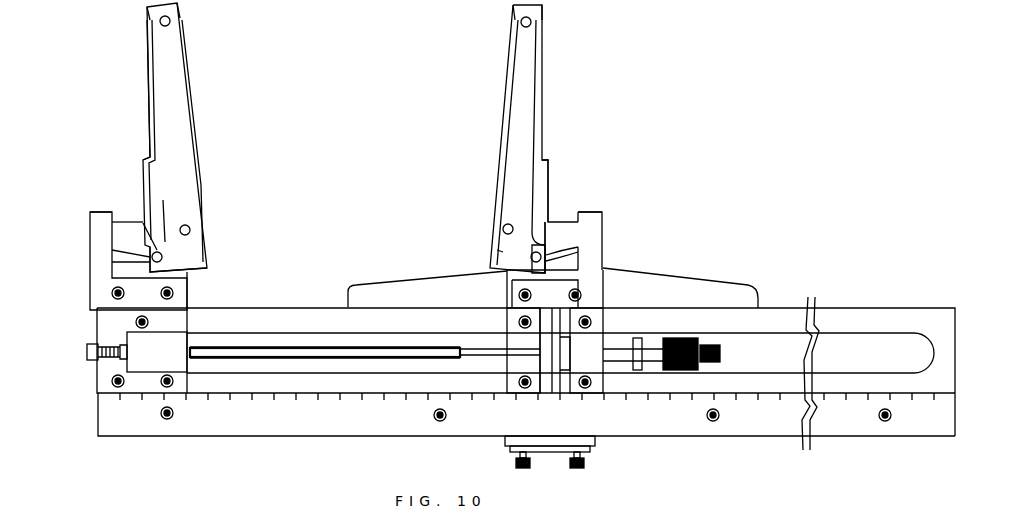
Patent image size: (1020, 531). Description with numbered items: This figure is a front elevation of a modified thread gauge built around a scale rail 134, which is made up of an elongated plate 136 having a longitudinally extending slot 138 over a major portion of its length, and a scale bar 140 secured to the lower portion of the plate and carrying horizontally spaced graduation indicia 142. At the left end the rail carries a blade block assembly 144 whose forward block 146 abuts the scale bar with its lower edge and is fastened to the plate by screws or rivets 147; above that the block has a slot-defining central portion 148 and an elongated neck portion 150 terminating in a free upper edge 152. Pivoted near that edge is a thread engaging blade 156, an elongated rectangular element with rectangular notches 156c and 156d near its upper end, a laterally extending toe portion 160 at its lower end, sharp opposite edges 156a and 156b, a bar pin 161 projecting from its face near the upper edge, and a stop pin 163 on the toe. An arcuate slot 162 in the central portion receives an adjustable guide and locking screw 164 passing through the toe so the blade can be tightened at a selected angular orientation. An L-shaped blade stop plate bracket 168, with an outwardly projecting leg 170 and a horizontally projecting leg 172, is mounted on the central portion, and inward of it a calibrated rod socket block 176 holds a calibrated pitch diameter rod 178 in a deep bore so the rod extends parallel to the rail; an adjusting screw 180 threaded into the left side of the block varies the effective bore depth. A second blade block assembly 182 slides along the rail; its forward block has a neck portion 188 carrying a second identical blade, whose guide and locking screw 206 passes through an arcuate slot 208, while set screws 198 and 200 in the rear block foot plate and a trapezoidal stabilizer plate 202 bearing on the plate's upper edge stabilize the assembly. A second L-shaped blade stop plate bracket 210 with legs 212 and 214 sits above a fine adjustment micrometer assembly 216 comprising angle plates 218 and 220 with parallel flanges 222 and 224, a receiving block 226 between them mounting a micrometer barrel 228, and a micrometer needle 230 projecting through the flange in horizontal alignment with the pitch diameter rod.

The scale rail 134 is at (873, 306).
The elongated plate 136 is at (835, 317).
The elongated slot 138 is at (223, 338).
The scale bar 140 is at (220, 420).
The graduation indicia 142 is at (277, 398).
The blade block assembly 144 is at (93, 376).
The forward block 146 is at (105, 320).
The screws or rivets 147 is at (125, 388).
The slot-defining central portion 148 is at (120, 228).
The elongated neck portion 150 is at (150, 145).
The free upper edge 152 is at (850, 530).
The thread engaging blade 156 is at (182, 141).
The sharp edge 156a is at (190, 68).
The sharp edge 156b is at (150, 51).
The rectangular notch 156c is at (148, 14).
The rectangular notch 156d is at (180, 13).
The toe portion 160 is at (163, 255).
The bar pin 161 is at (168, 26).
The arcuate slot 162 is at (178, 266).
The stop pin 163 is at (190, 229).
The adjustable guide and locking screw 164 is at (143, 218).
The L-shaped blade stop plate bracket 168 is at (88, 243).
The outwardly projecting leg 170 is at (93, 212).
The horizontally projecting leg 172 is at (155, 302).
The calibrated rod socket block 176 is at (167, 359).
The calibrated pitch diameter rod 178 is at (255, 352).
The adjusting screw 180 is at (90, 350).
The second blade block assembly 182 is at (640, 266).
The neck portion 188 is at (543, 138).
The set screw 198 is at (585, 465).
The set screw 200 is at (516, 465).
The stabilizer plate 202 is at (415, 304).
The guide and locking screw 206 is at (540, 253).
The arcuate slot 208 is at (578, 250).
The L-shaped blade stop plate bracket 210 is at (592, 210).
The outwardly extending leg 212 is at (598, 213).
The leg 214 is at (563, 303).
The fine adjustment micrometer assembly 216 is at (610, 386).
The angle plate 218 is at (515, 385).
The angle plate 220 is at (578, 385).
The flange 222 is at (543, 333).
The flange 224 is at (600, 323).
The receiving block 226 is at (552, 358).
The micrometer barrel 228 is at (600, 360).
The micrometer needle 230 is at (468, 357).